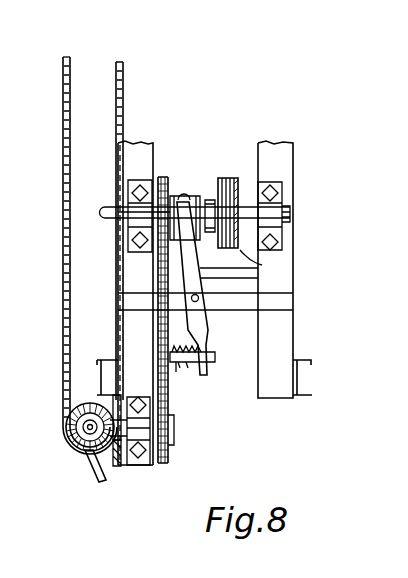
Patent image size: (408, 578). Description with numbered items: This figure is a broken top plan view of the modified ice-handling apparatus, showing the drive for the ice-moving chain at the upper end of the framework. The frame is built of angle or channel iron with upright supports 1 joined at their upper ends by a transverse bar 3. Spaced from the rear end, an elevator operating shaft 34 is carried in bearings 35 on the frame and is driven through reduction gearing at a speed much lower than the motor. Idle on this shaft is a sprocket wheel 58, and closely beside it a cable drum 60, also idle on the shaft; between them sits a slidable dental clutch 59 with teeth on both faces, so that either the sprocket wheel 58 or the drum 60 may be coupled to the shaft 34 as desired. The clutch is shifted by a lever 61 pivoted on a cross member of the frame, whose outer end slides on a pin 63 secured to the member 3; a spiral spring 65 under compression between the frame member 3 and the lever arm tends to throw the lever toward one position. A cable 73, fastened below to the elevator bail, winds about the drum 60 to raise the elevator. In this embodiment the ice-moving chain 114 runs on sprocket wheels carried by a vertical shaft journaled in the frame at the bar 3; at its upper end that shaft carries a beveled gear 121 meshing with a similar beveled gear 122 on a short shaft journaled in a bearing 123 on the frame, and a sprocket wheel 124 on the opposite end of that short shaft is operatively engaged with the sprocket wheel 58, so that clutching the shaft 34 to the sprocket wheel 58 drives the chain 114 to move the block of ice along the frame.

The upright supports 1 is at (304, 398).
The transverse bar 3 is at (293, 327).
The elevator operating shaft 34 is at (291, 213).
The bearings 35 is at (282, 205).
The sprocket wheel 58 is at (166, 182).
The slidable dental clutch 59 is at (186, 197).
The cable drum 60 is at (250, 164).
The lever 61 is at (200, 285).
The pin 63 is at (215, 356).
The spiral spring 65 is at (180, 364).
The cable 73 is at (263, 263).
The chain 114 is at (63, 350).
The beveled gear 121 is at (87, 458).
The beveled gear 122 is at (120, 472).
The bearing 123 is at (150, 466).
The sprocket wheel 124 is at (160, 415).